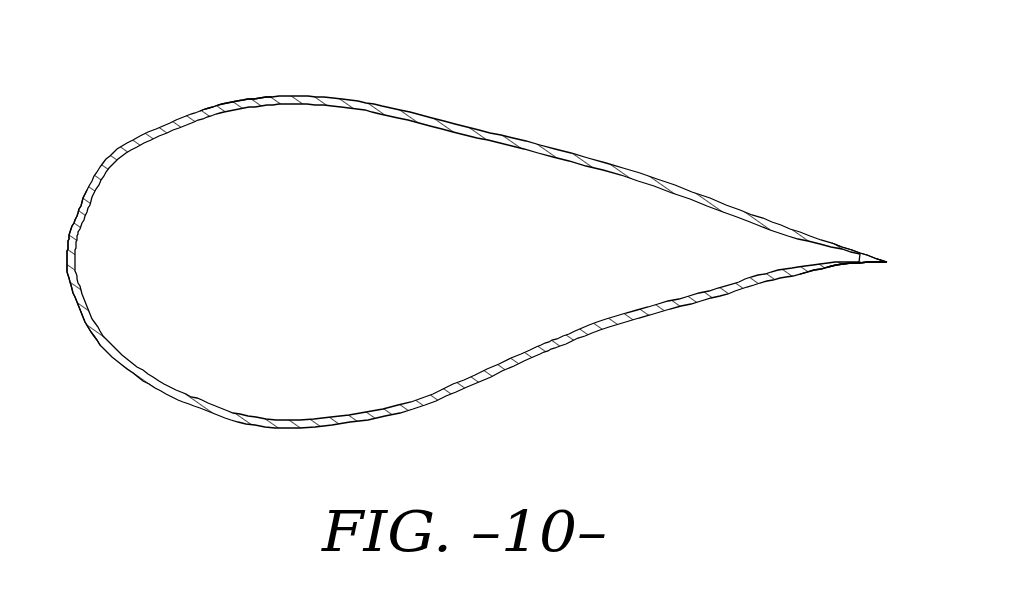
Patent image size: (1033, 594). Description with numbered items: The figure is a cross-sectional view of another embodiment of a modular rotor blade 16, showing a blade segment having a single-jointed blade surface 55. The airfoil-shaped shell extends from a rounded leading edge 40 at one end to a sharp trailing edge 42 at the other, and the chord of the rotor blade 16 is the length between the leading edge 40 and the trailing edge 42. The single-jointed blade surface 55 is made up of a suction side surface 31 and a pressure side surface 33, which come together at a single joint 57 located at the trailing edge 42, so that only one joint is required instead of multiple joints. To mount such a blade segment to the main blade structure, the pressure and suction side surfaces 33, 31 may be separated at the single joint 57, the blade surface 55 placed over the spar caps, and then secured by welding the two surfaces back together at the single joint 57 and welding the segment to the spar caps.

The rotor blade 16 is at (655, 100).
The suction side surface 31 is at (548, 352).
The pressure side surface 33 is at (430, 110).
The leading edge 40 is at (66, 258).
The trailing edge 42 is at (885, 262).
The single-jointed blade surface 55 is at (238, 99).
The single joint 57 is at (849, 268).